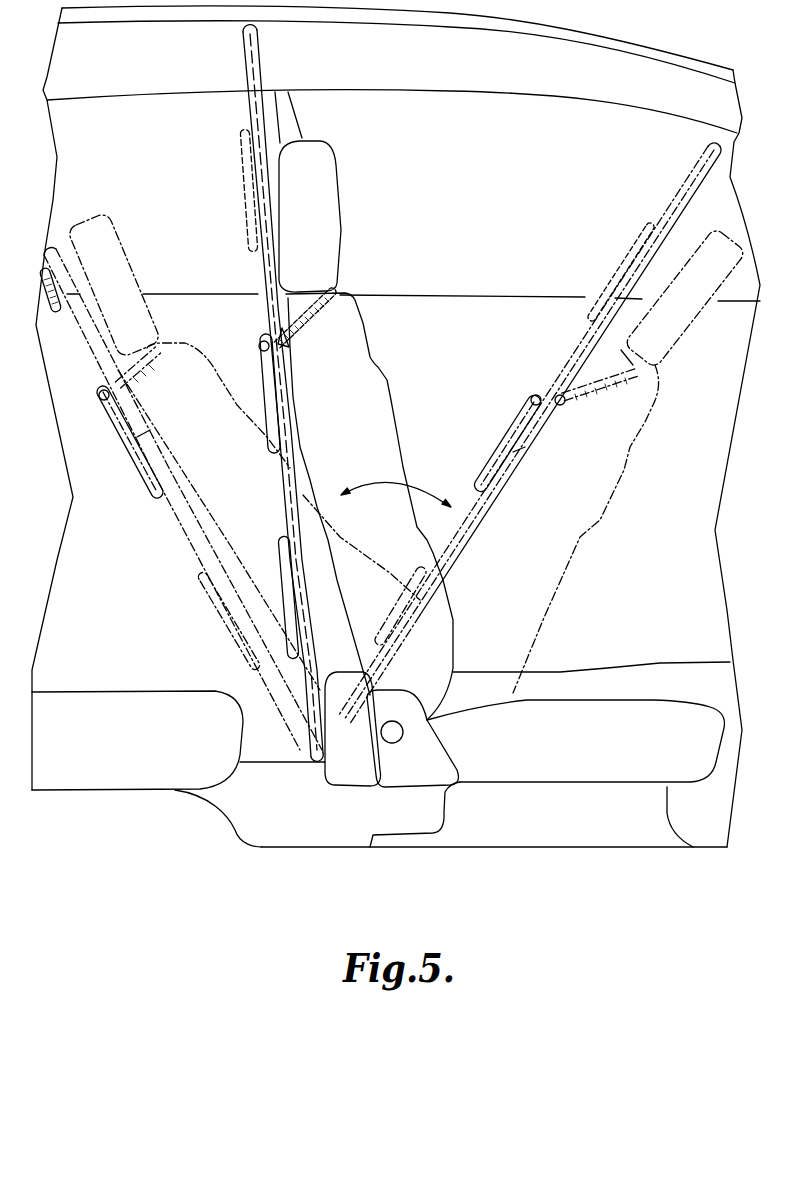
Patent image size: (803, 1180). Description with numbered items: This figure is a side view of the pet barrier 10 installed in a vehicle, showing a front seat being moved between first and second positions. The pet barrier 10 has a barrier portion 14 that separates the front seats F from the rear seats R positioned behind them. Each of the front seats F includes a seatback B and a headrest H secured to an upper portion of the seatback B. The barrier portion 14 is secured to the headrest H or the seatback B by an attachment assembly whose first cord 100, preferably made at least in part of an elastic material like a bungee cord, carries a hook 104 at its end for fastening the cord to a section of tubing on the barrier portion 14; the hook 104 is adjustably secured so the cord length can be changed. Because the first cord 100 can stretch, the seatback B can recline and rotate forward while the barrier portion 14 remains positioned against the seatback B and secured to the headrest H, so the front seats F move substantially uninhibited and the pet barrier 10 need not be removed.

The pet barrier 10 is at (174, 139).
The barrier portion 14 is at (238, 76).
The first cord 100 is at (279, 292).
The hook 104 is at (260, 342).
The headrest H is at (327, 186).
The seatback B is at (375, 395).
The rear seats R is at (90, 778).
The front seats F is at (565, 768).